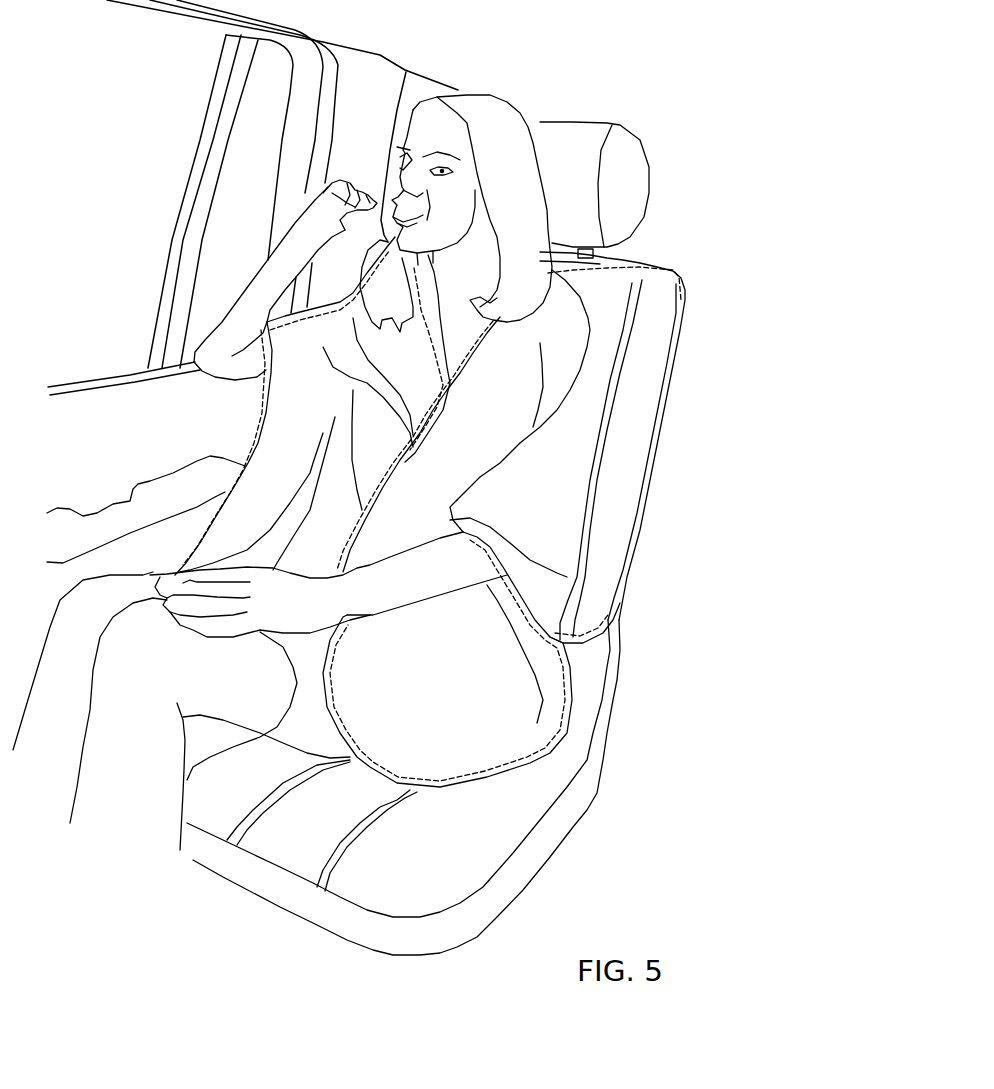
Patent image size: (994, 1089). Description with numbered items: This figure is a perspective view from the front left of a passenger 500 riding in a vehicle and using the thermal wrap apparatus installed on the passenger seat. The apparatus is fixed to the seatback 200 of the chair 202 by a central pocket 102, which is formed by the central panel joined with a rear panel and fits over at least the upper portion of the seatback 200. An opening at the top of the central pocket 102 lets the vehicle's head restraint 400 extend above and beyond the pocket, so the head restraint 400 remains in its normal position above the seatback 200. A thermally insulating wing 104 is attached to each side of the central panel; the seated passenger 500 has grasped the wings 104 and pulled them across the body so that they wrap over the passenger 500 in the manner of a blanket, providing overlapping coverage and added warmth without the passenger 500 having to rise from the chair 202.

The central pocket 102 is at (650, 255).
The wing 104 is at (395, 447).
The seatback 200 is at (613, 672).
The chair 202 is at (442, 852).
The head restraint 400 is at (650, 178).
The passenger 500 is at (253, 683).